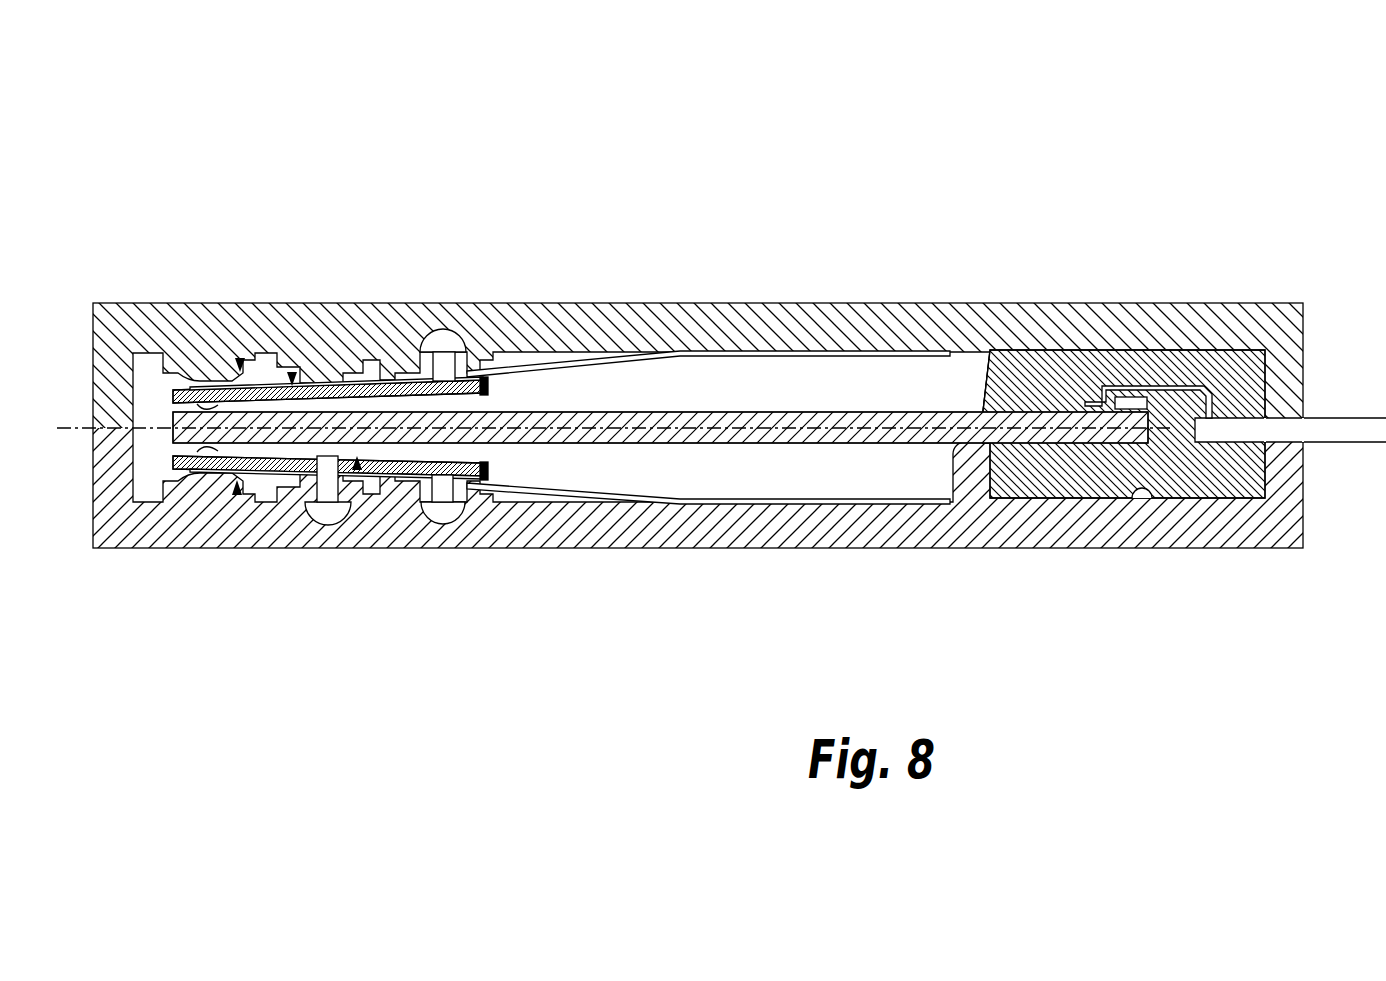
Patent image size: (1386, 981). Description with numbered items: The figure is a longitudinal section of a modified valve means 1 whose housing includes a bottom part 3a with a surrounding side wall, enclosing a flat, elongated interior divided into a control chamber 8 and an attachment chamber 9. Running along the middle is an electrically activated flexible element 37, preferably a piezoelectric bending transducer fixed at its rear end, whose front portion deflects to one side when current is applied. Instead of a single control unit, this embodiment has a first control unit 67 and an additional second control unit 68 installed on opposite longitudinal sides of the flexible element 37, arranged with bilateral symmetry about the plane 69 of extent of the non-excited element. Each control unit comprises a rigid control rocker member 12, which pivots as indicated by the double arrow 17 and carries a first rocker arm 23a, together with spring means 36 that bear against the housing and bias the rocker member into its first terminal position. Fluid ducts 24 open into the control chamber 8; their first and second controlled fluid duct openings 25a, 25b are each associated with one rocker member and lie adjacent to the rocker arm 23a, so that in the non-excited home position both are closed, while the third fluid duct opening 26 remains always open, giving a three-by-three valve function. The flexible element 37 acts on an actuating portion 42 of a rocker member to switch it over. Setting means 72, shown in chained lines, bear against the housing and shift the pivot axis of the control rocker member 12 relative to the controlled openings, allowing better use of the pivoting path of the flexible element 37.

The valve means 1 is at (1195, 275).
The bottom part 3a is at (980, 527).
The control chamber 8 is at (528, 462).
The attachment chamber 9 is at (1152, 500).
The control rocker member 12 is at (263, 387).
The double arrow 17 is at (292, 383).
The first rocker arm 23a is at (490, 385).
The fluid ducts 24 is at (448, 330).
The first controlled fluid duct opening 25a is at (435, 478).
The second controlled fluid duct opening 25b is at (485, 372).
The third fluid duct opening 26 is at (322, 524).
The spring means 36 is at (580, 355).
The flexible element 37 is at (808, 417).
The actuating portion 42 is at (215, 406).
The first control unit 67 is at (236, 500).
The second control unit 68 is at (240, 368).
The plane of extent 69 is at (733, 427).
The setting means 72 is at (327, 392).